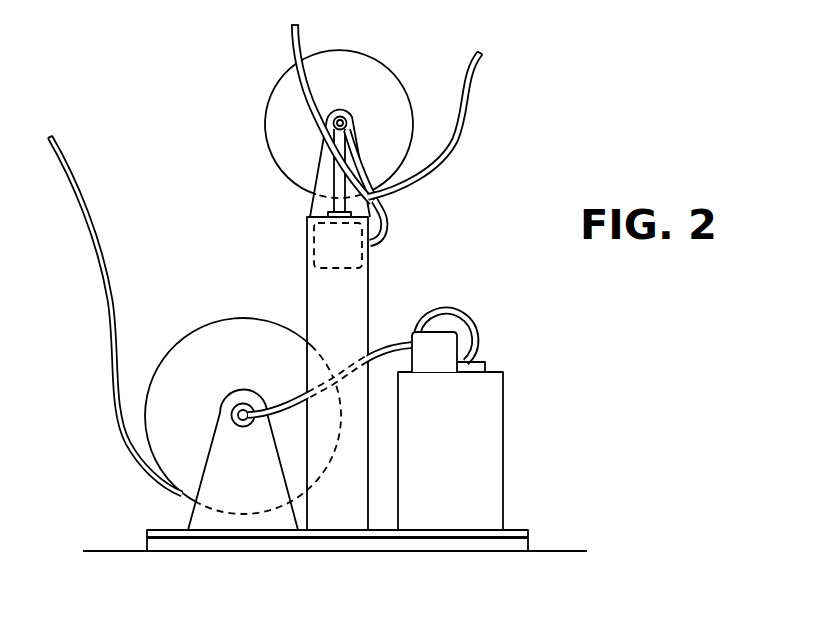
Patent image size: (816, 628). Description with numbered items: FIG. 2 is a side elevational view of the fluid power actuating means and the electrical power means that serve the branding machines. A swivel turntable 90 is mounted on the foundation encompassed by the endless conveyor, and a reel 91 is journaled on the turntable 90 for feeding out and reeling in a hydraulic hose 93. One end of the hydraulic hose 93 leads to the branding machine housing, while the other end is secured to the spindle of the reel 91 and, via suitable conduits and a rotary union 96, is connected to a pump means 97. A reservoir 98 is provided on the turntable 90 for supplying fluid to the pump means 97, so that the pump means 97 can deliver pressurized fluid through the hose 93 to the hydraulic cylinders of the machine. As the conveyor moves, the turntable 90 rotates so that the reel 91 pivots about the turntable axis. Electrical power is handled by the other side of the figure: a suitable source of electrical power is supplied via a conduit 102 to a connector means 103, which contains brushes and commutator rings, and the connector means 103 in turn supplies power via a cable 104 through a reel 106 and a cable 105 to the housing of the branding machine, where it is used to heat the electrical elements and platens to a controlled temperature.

The swivel turntable 90 is at (522, 530).
The reel 91 is at (220, 323).
The hydraulic hose 93 is at (92, 235).
The rotary union 96 is at (235, 403).
The pump means 97 is at (448, 333).
The reservoir 98 is at (490, 433).
The conduit 102 is at (292, 46).
The connector means 103 is at (363, 259).
The cable 104 is at (371, 212).
The cable 105 is at (462, 118).
The reel 106 is at (354, 60).